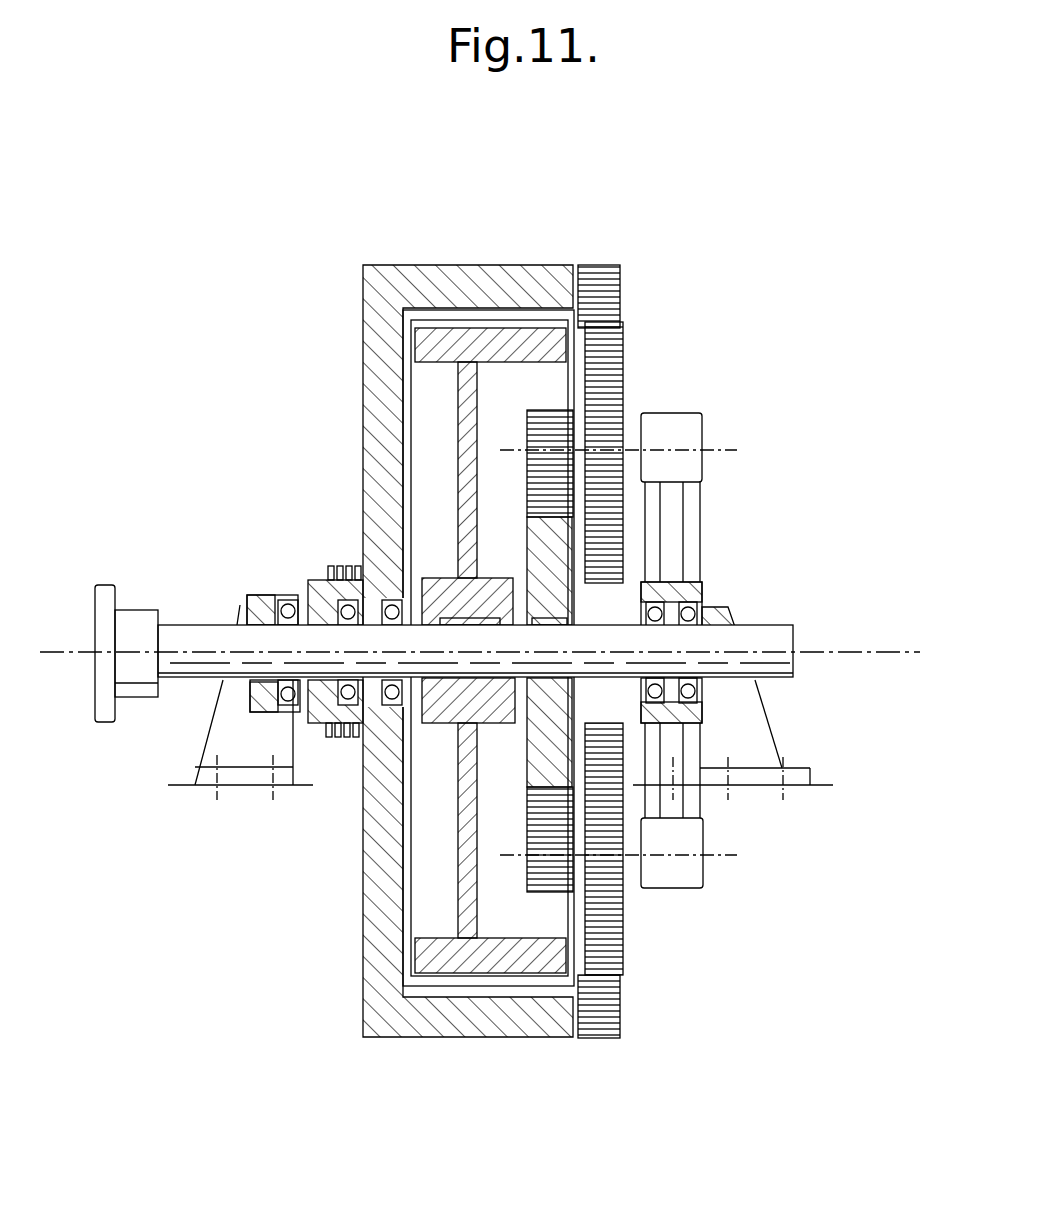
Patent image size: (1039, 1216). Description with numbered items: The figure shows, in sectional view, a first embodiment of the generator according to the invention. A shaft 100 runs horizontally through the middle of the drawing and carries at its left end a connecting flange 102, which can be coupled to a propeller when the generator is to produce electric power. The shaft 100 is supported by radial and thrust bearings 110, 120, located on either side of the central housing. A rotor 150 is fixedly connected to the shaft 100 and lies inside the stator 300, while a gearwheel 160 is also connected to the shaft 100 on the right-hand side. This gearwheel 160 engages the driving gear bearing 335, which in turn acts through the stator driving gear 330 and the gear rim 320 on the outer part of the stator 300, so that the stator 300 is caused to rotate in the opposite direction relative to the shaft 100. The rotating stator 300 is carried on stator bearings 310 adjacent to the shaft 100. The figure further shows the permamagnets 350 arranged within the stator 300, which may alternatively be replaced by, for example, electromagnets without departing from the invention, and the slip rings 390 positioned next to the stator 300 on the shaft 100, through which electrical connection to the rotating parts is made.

The shaft 100 is at (778, 672).
The connecting flange 102 is at (129, 622).
The radial and thrust bearing 110 is at (262, 596).
The radial and thrust bearing 120 is at (680, 594).
The rotor 150 is at (482, 345).
The gearwheel 160 is at (555, 560).
The stator 300 is at (413, 282).
The stator bearing 310 is at (330, 683).
The gear rim 320 is at (607, 300).
The stator driving gear 330 is at (608, 383).
The driving gear bearing 335 is at (697, 435).
The permamagnet 350 is at (462, 978).
The slip ring 390 is at (323, 565).